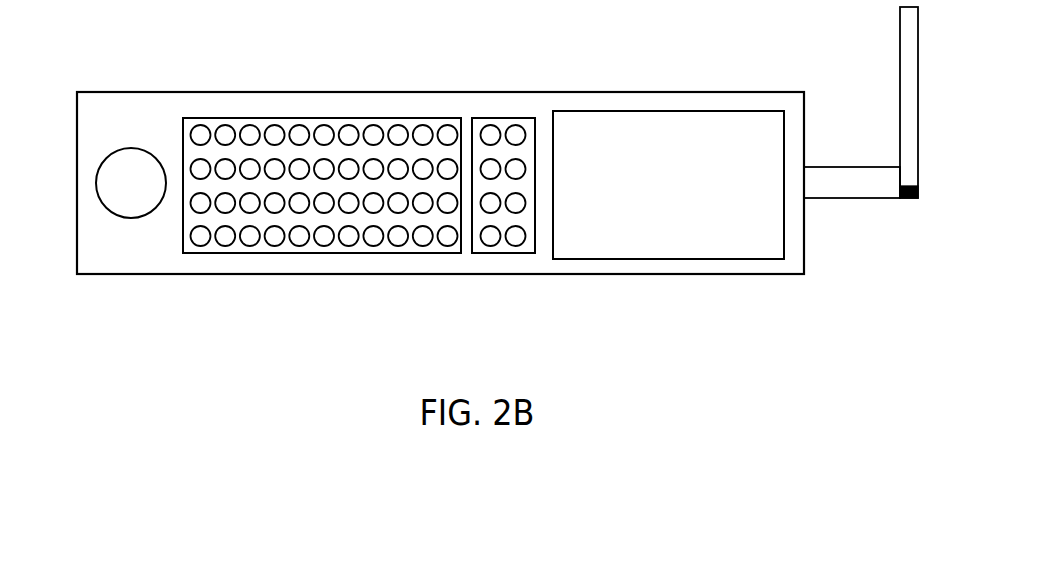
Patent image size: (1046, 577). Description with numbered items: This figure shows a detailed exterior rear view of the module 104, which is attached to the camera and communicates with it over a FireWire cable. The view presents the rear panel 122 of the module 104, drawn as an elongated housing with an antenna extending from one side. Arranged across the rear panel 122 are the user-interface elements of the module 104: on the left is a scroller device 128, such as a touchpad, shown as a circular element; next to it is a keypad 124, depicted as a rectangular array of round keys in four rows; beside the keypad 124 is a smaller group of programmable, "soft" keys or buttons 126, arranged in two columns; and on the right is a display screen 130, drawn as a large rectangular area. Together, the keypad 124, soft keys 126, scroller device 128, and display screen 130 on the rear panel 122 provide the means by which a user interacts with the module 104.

The module 104 is at (668, 93).
The rear panel 122 is at (441, 100).
The keypad 124 is at (348, 241).
The programmable soft keys 126 is at (515, 241).
The scroller device 128 is at (131, 203).
The display screen 130 is at (733, 239).